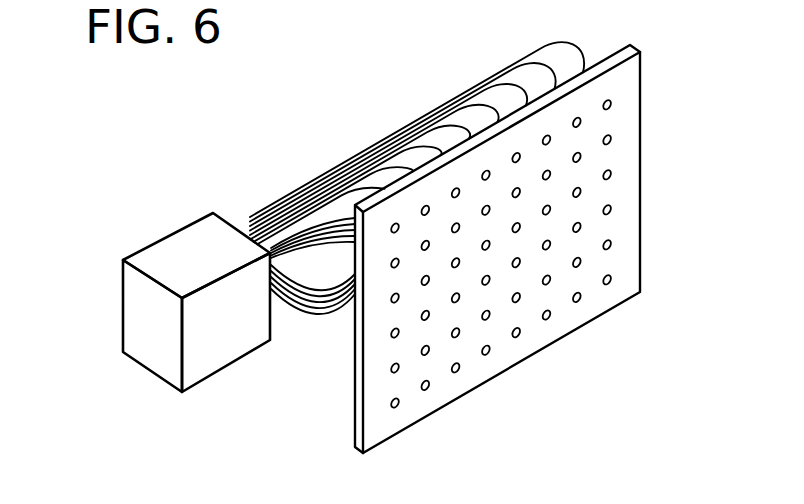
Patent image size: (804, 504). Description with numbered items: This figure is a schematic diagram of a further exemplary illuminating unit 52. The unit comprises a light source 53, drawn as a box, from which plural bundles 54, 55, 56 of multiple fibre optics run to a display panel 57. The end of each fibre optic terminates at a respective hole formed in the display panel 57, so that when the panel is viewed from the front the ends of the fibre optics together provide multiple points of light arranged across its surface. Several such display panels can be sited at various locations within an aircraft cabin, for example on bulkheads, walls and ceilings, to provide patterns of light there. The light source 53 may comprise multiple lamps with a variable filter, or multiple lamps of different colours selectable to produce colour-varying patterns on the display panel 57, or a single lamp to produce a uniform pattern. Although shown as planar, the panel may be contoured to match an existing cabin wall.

The illuminating unit 52 is at (576, 390).
The light source 53 is at (202, 362).
The bundle of multiple fibre optics 54 is at (276, 256).
The bundle of multiple fibre optics 55 is at (322, 172).
The bundle of multiple fibre optics 56 is at (315, 313).
The display panel 57 is at (437, 397).